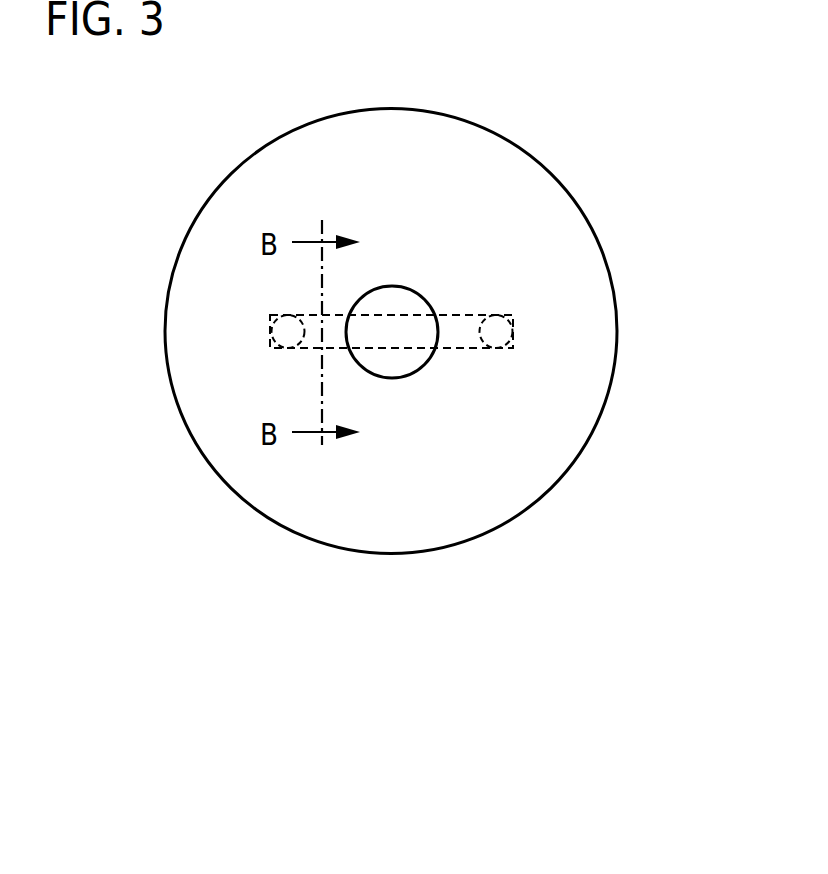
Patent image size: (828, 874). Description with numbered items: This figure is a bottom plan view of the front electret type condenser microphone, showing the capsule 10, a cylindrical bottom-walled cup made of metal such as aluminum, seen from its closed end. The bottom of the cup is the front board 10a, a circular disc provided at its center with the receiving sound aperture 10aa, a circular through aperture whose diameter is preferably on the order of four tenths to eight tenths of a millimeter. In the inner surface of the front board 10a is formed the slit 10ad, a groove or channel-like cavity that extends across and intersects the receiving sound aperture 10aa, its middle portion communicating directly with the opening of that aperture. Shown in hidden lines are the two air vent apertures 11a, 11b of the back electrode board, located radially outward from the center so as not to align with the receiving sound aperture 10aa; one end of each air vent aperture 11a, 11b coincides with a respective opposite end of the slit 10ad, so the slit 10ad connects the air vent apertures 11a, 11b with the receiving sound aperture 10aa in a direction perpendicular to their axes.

The capsule 10 is at (396, 303).
The front board 10a is at (327, 137).
The receiving sound aperture 10aa is at (398, 360).
The slit 10ad is at (455, 348).
The air vent aperture 11a is at (292, 333).
The air vent aperture 11b is at (503, 328).